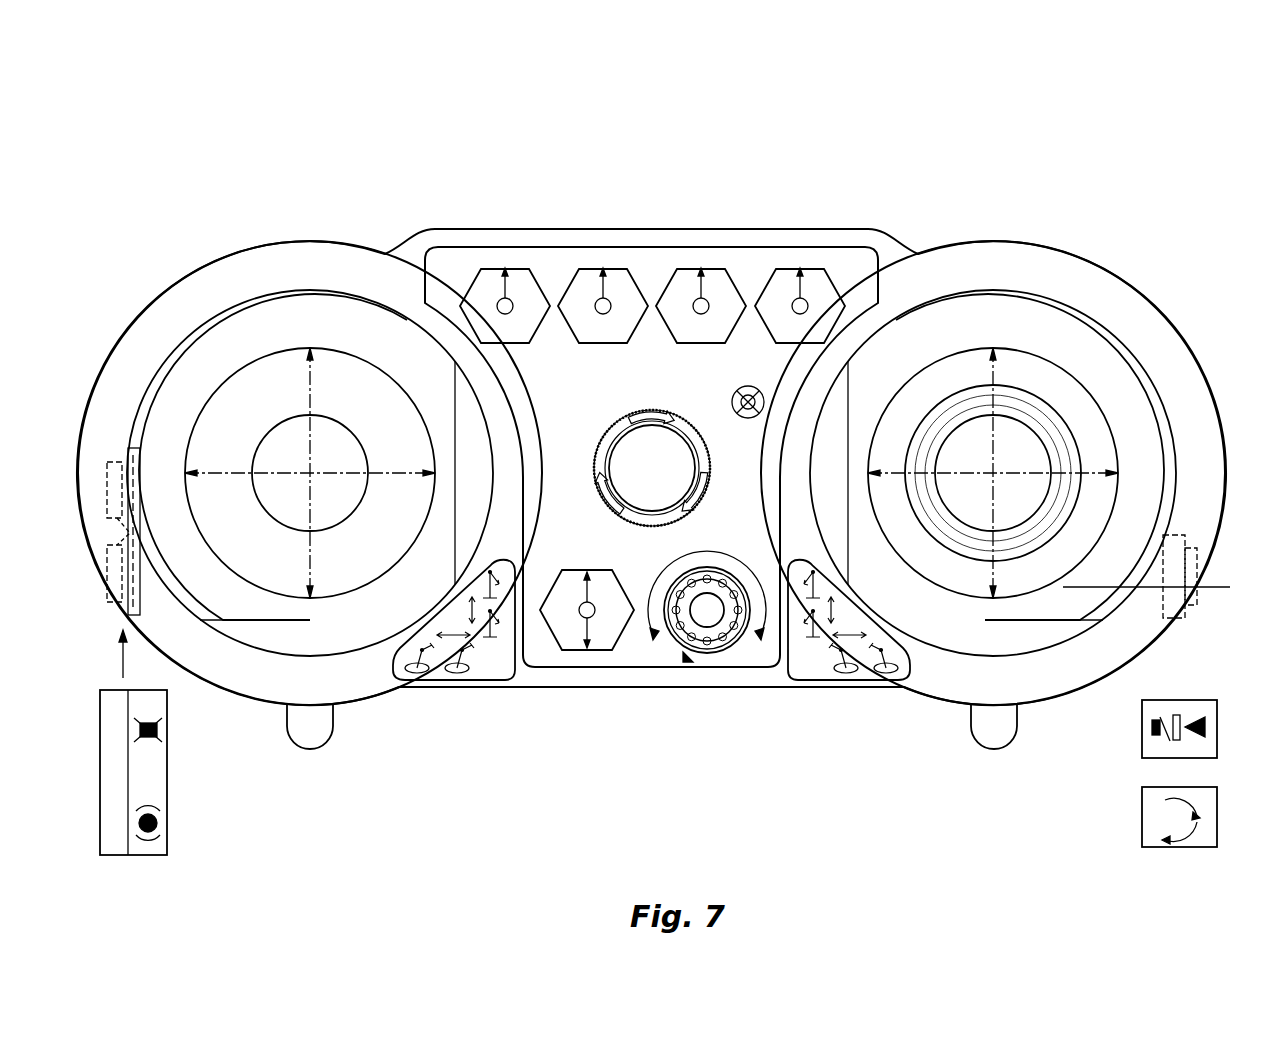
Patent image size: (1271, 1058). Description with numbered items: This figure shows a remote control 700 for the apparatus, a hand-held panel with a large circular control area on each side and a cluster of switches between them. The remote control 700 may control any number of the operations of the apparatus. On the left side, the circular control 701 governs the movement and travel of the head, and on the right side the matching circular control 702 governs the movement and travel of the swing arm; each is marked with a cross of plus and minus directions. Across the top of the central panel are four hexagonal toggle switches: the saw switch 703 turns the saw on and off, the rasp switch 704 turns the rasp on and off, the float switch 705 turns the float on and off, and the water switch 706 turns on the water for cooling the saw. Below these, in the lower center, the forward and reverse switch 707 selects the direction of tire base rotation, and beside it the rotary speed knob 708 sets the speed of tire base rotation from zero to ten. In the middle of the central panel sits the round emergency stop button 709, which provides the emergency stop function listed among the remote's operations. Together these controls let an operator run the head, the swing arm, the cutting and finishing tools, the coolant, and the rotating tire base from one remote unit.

The remote control 700 is at (986, 130).
The head control 701 is at (255, 548).
The swing arm control 702 is at (1048, 388).
The saw control 703 is at (487, 287).
The rasp control 704 is at (582, 287).
The float control 705 is at (682, 287).
The saw cooling water control 706 is at (783, 287).
The tire base rotation direction control 707 is at (558, 620).
The tire base rotation speed control 708 is at (740, 642).
The stop button 709 is at (632, 468).